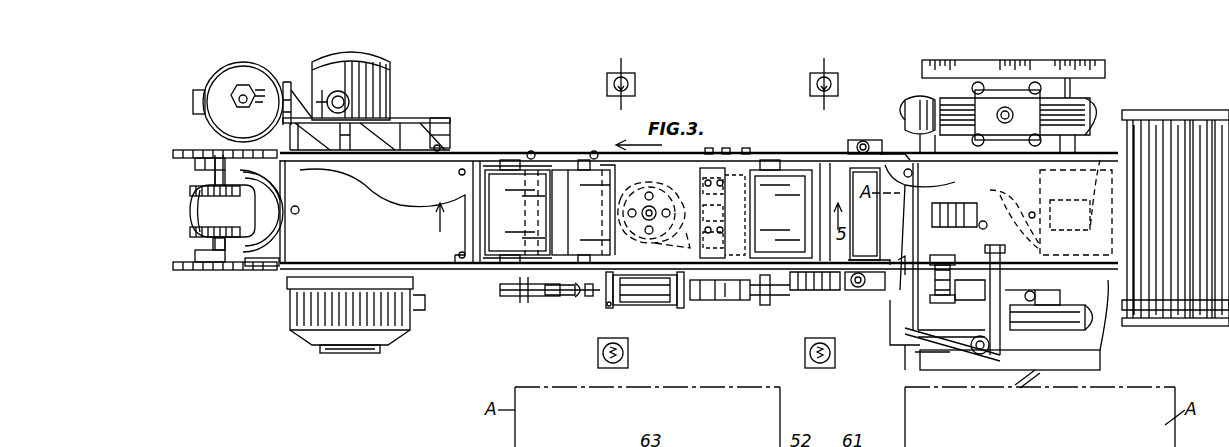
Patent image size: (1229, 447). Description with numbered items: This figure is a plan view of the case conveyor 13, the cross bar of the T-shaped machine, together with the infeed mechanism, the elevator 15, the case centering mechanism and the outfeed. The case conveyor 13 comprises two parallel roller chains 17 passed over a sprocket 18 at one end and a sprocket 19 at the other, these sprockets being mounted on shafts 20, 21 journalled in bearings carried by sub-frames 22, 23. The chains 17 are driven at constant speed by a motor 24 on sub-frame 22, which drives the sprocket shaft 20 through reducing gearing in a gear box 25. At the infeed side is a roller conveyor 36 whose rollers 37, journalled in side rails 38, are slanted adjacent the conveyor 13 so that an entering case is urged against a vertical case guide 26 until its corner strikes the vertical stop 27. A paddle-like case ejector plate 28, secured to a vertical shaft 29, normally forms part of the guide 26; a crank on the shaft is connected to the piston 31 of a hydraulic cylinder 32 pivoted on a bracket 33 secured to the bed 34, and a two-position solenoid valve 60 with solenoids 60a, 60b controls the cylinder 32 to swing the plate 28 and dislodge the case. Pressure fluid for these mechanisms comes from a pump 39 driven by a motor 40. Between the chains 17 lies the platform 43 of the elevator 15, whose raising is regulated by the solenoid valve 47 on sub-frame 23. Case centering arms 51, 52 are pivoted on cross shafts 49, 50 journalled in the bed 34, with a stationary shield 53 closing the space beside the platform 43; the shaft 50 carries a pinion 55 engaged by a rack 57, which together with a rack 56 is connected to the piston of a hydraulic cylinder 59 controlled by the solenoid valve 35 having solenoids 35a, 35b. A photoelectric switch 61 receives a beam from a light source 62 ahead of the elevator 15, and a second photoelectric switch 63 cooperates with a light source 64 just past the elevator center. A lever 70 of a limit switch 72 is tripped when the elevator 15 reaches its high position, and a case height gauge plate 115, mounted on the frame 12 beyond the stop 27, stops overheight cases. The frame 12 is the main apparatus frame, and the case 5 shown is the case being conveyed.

The sheet 5 is at (382, 216).
The frame 12 is at (704, 439).
The case conveyor 13 is at (822, 146).
The elevator 15 is at (632, 252).
The roller chains 17 is at (270, 272).
The sprocket 18 is at (215, 272).
The sprocket 19 is at (1130, 315).
The shaft 20 is at (205, 180).
The shaft 21 is at (1095, 160).
The sub-frame 22 is at (447, 135).
The sub-frame 23 is at (898, 152).
The motor 24 is at (240, 270).
The gear box 25 is at (188, 217).
The vertical case guide 26 is at (1002, 360).
The vertical stop 27 is at (890, 345).
The case ejector plate 28 is at (955, 352).
The vertical shaft 29 is at (978, 357).
The piston 31 is at (930, 320).
The hydraulic cylinder 32 is at (958, 288).
The bracket 33 is at (902, 260).
The bed 34 is at (848, 292).
The solenoid valve 35 is at (1070, 330).
The solenoid 35a is at (956, 266).
The solenoid 35b is at (1090, 362).
The conveyor 36 is at (1170, 135).
The rollers 37 is at (1210, 318).
The side rails 38 is at (1185, 120).
The pump 39 is at (390, 82).
The motor 40 is at (312, 335).
The platform 43 is at (620, 180).
The solenoid valve 47 is at (1080, 100).
The cross shaft 49 is at (590, 158).
The cross shaft 50 is at (730, 165).
The case centering arm 51 is at (480, 165).
The case centering arm 52 is at (840, 163).
The stationary shield 53 is at (510, 165).
The pinion 55 is at (815, 283).
The rack 56 is at (516, 297).
The rack 57 is at (740, 300).
The hydraulic cylinder 59 is at (653, 305).
The solenoid valve 60 is at (960, 176).
The solenoid 60a is at (960, 200).
The solenoid 60b is at (1063, 226).
The photoelectric switch 61 is at (810, 75).
The light source 62 is at (805, 352).
The photoelectric switch 63 is at (607, 75).
The light source 64 is at (628, 350).
The lever 70 is at (781, 209).
The limit switch 72 is at (715, 152).
The case height gauge plate 115 is at (1012, 384).